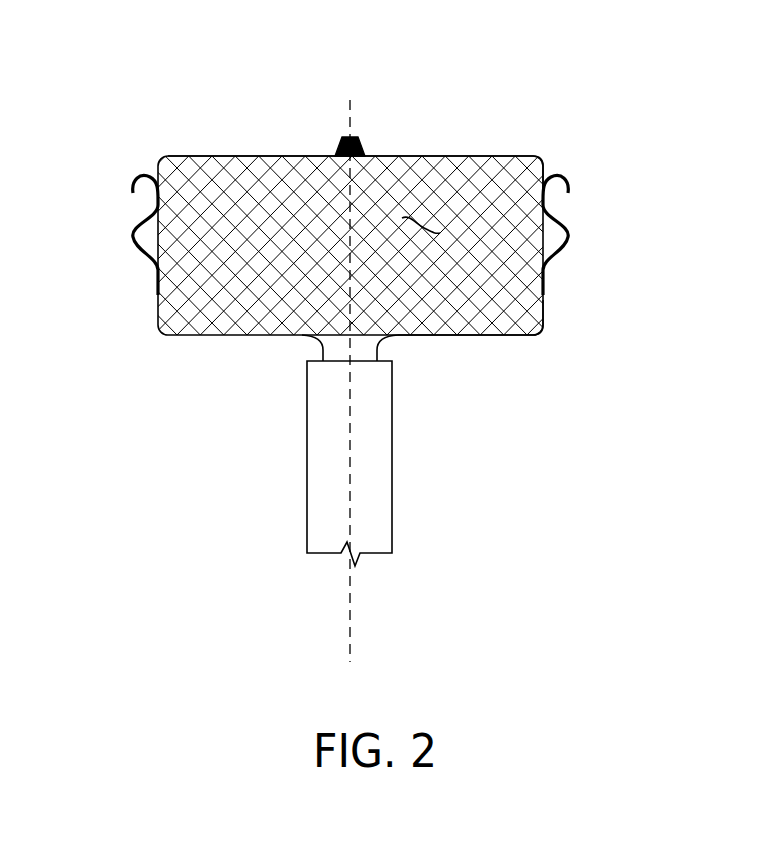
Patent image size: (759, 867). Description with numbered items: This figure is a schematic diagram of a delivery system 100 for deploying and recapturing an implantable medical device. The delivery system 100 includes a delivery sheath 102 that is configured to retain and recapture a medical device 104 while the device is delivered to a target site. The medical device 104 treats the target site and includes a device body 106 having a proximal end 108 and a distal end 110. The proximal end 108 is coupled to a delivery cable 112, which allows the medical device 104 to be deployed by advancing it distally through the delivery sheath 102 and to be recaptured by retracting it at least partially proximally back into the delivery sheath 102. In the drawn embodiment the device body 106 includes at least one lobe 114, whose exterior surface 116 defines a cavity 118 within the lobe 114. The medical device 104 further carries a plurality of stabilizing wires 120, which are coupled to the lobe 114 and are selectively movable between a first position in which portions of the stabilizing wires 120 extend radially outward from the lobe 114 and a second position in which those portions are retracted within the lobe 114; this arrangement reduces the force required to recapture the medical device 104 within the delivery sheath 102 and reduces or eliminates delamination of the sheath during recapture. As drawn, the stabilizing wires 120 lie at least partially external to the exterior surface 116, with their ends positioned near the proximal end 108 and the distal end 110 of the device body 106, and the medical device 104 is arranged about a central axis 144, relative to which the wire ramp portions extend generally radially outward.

The delivery system 100 is at (622, 211).
The delivery sheath 102 is at (307, 440).
The medical device 104 is at (514, 129).
The device body 106 is at (202, 156).
The proximal end 108 is at (590, 334).
The distal end 110 is at (555, 139).
The delivery cable 112 is at (323, 348).
The lobe 114 is at (492, 310).
The exterior surface 116 is at (424, 335).
The cavity 118 is at (420, 220).
The stabilizing wires 120 is at (133, 237).
The central axis 144 is at (351, 120).